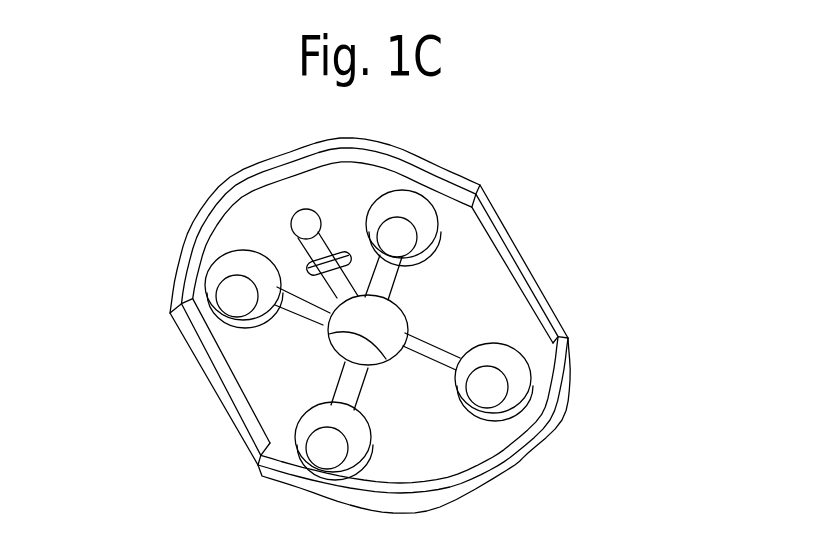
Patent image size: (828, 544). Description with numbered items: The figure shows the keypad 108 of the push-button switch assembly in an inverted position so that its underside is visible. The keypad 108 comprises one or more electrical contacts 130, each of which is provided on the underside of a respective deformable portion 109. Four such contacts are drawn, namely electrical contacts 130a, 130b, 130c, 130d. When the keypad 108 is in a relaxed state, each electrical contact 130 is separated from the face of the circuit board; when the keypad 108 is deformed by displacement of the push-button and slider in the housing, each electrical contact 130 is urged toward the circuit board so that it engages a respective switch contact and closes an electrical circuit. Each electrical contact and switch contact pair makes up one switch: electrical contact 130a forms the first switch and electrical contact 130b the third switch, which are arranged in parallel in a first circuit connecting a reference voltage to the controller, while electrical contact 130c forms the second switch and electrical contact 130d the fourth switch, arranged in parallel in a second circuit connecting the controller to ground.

The keypad 108 is at (194, 155).
The deformable portion 109 is at (223, 262).
The electrical contact 130 is at (367, 317).
The electrical contact 130a is at (232, 297).
The electrical contact 130b is at (498, 385).
The electrical contact 130c is at (400, 229).
The electrical contact 130d is at (315, 452).